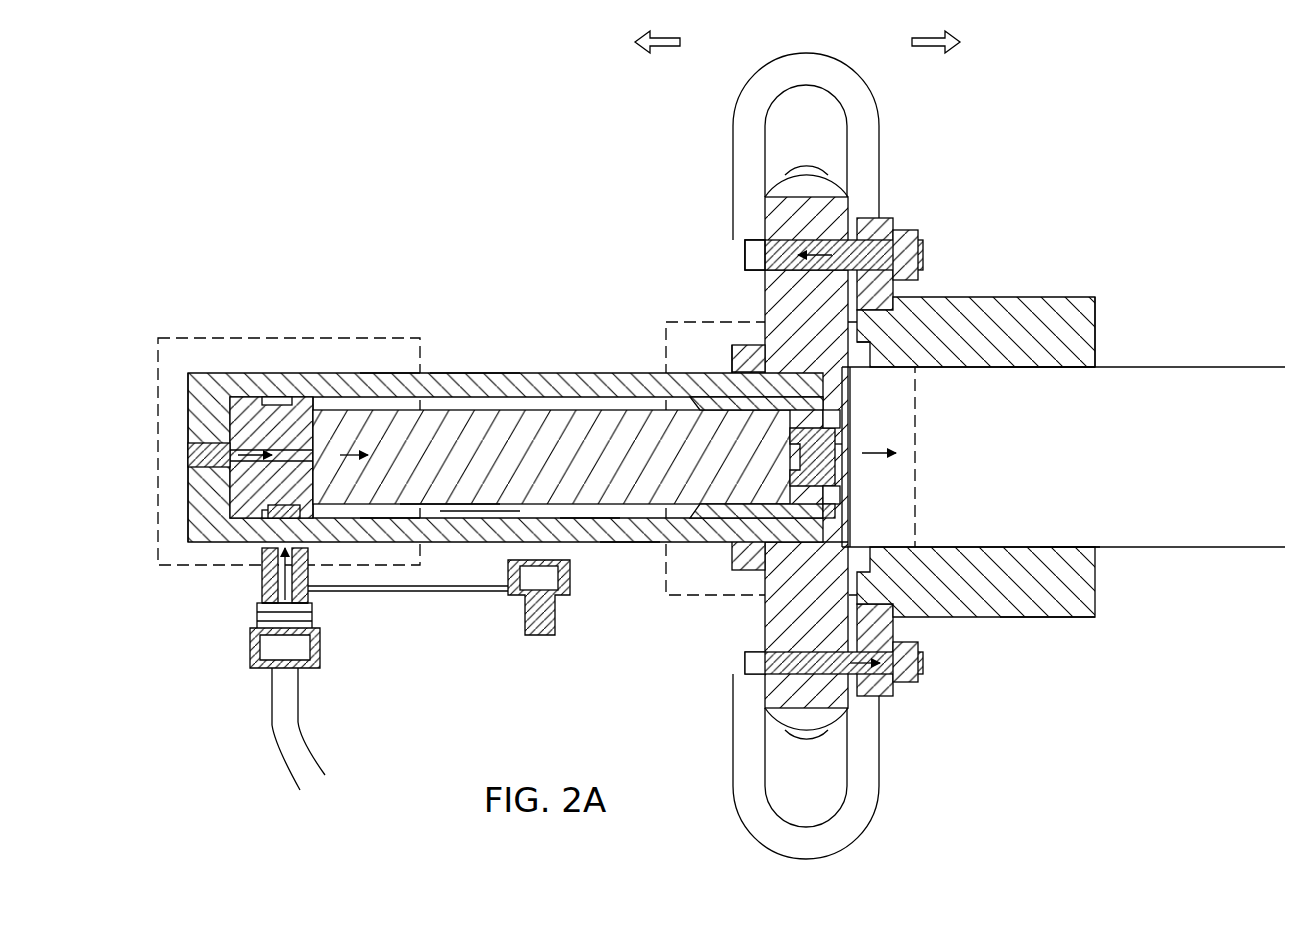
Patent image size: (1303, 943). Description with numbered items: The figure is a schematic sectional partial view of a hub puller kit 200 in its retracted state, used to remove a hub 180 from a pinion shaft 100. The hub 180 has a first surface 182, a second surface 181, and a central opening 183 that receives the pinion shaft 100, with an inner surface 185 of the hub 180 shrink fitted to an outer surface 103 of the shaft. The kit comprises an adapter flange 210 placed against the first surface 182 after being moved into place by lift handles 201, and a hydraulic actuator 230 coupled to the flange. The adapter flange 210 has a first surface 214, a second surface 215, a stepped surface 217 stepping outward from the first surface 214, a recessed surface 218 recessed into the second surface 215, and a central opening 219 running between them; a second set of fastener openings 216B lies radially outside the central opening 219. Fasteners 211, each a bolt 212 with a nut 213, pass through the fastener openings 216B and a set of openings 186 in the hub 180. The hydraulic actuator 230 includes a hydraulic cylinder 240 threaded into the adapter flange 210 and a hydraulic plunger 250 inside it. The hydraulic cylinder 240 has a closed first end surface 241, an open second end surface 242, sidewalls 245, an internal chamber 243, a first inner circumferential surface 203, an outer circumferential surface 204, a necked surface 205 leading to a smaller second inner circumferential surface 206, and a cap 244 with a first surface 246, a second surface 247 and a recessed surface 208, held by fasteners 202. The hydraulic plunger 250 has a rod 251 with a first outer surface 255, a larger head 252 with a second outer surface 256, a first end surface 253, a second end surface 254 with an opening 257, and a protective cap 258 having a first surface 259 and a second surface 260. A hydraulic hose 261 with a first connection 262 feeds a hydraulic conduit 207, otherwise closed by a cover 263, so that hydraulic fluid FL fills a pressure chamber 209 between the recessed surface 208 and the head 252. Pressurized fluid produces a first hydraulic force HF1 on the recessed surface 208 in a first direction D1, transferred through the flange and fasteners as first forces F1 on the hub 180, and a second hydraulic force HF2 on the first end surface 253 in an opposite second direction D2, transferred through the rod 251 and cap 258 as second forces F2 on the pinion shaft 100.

The pinion shaft 100 is at (1180, 515).
The outer surface 103 is at (1065, 545).
The hub 180 is at (1030, 300).
The second surface 181 is at (1097, 352).
The first surface 182 is at (872, 340).
The central opening 183 is at (1095, 332).
The inner surface 185 is at (1030, 612).
The set of openings 186 is at (880, 218).
The hub puller kit 200 is at (478, 162).
The lift handles 201 is at (832, 57).
The fasteners 202 is at (188, 455).
The first inner circumferential surface 203 is at (580, 544).
The outer circumferential surface 204 is at (625, 540).
The necked surface 205 is at (700, 403).
The second inner circumferential surface 206 is at (752, 412).
The hydraulic conduit 207 is at (264, 580).
The recessed surface 208 is at (274, 525).
The pressure chamber 209 is at (285, 552).
The adapter flange 210 is at (732, 348).
The fasteners 211 is at (926, 243).
The bolt 212 is at (750, 242).
The nut 213 is at (905, 232).
The first surface 214 is at (746, 262).
The second surface 215 is at (782, 276).
The second set of fastener openings 216B is at (800, 200).
The stepped surface 217 is at (732, 368).
The recessed surface 218 is at (775, 342).
The central opening 219 is at (745, 560).
The hydraulic actuator 230 is at (395, 372).
The hydraulic cylinder 240 is at (548, 385).
The first end surface 241 is at (232, 397).
The second end surface 242 is at (835, 508).
The internal chamber 243 is at (468, 395).
The cap 244 is at (265, 512).
The sidewalls 245 is at (385, 544).
The first surface 246 is at (240, 470).
The second surface 247 is at (240, 415).
The hydraulic plunger 250 is at (535, 440).
The rod 251 is at (443, 518).
The head 252 is at (262, 397).
The first end surface 253 is at (290, 395).
The second end surface 254 is at (800, 440).
The first outer surface 255 is at (470, 515).
The second outer surface 256 is at (325, 393).
The opening 257 is at (812, 532).
The cap 258 is at (846, 445).
The first surface 259 is at (838, 470).
The second surface 260 is at (848, 433).
The hydraulic hose 261 is at (275, 745).
The first connection 262 is at (320, 650).
The cover 263 is at (524, 612).
The first direction D1 is at (637, 42).
The second direction D2 is at (955, 42).
The first forces F1 is at (920, 258).
The second forces F2 is at (912, 451).
The hydraulic fluid FL is at (302, 592).
The first hydraulic force HF1 is at (235, 455).
The second hydraulic force HF2 is at (350, 455).